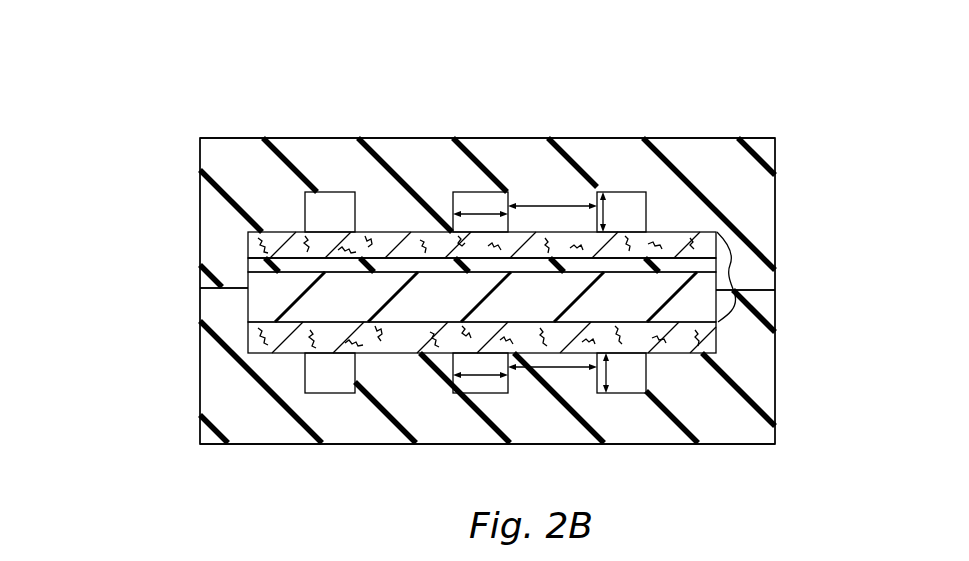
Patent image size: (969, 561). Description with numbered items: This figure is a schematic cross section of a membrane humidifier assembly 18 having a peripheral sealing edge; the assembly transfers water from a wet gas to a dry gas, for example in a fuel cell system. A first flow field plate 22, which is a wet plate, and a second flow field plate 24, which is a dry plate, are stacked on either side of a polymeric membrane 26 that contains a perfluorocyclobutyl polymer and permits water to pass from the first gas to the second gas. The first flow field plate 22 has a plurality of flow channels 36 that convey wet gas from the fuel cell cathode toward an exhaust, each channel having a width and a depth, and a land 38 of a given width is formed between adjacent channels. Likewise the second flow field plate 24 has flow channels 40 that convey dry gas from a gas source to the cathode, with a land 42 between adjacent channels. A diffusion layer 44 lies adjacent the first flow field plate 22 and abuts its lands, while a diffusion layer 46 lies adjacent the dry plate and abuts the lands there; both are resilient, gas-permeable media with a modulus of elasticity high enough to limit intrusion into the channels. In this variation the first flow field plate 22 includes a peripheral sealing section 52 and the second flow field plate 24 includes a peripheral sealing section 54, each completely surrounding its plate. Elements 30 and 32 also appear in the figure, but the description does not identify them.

The membrane humidifier assembly 18 is at (321, 94).
The first flow field plate 22 is at (552, 138).
The second flow field plate 24 is at (430, 444).
The polymeric membrane 26 is at (733, 278).
The lower body portion 30 is at (246, 293).
The interface layer 32 is at (250, 257).
The flow channels 36 is at (318, 202).
The land 38 is at (414, 232).
The flow channels 40 is at (307, 387).
The land 42 is at (390, 353).
The diffusion layer 44 is at (249, 233).
The diffusion layer 46 is at (250, 340).
The peripheral sealing section 52 is at (200, 273).
The peripheral sealing section 54 is at (215, 313).